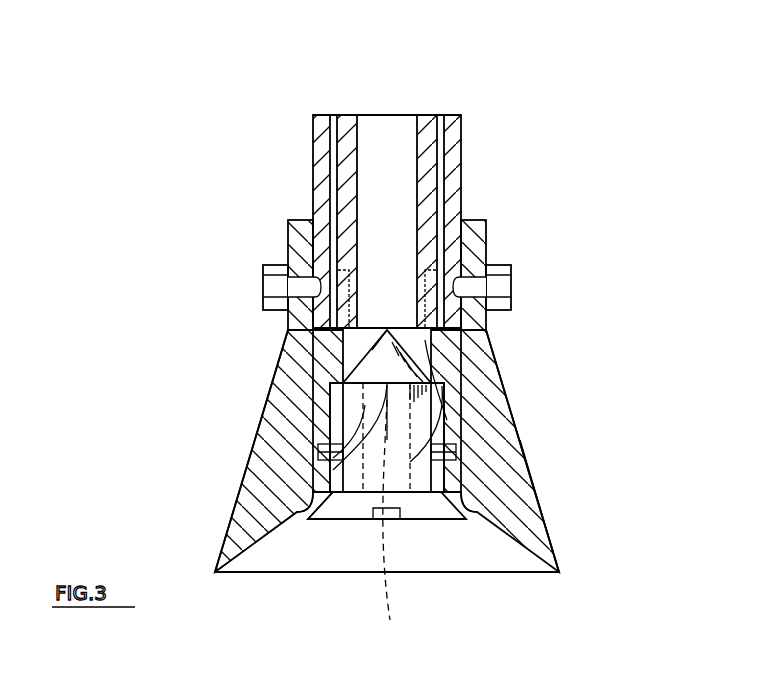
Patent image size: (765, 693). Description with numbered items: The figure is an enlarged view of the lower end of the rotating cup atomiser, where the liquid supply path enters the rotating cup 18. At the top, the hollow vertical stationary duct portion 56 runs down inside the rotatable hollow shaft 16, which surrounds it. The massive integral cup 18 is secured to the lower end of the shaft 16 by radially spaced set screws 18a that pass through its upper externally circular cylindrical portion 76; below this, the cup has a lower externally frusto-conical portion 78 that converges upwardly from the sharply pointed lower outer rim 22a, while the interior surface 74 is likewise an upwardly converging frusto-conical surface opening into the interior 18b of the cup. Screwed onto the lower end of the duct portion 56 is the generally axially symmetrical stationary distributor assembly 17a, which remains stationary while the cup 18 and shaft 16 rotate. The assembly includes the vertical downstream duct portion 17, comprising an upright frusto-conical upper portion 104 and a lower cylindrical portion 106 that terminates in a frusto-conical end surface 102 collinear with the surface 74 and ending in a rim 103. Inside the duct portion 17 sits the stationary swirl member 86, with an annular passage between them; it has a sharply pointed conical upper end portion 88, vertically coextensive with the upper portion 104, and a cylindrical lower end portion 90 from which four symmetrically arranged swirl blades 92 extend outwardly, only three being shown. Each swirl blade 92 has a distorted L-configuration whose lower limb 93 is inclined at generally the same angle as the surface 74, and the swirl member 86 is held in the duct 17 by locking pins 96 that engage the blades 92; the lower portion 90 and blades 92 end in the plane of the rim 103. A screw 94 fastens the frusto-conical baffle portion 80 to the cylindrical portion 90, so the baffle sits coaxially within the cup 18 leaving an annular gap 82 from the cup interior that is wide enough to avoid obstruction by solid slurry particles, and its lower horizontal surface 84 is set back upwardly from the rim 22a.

The rotatable hollow shaft 16 is at (461, 127).
The stationary duct portion 56 is at (412, 115).
The upper externally circular cylindrical portion 76 is at (488, 220).
The set screws 18a is at (273, 265).
The lower externally frusto-conical portion 78 is at (503, 395).
The rotating cup 18 is at (520, 447).
The conical upper end portion 88 is at (367, 362).
The frusto-conical upper portion 104 is at (372, 350).
The swirl member 86 is at (353, 410).
The swirl blades 92 is at (335, 393).
The downstream duct portion 17 is at (420, 358).
The lower limb 93 is at (330, 440).
The cylindrical lower end portion 90 is at (420, 398).
The lower cylindrical portion 106 is at (330, 438).
The locking pins 96 is at (456, 458).
The frusto-conical end surface 102 is at (297, 513).
The rim 103 is at (456, 498).
The baffle portion 80 is at (340, 520).
The annular gap 82 is at (297, 518).
The lower horizontal surface 84 is at (410, 520).
The screw 94 is at (391, 522).
The stationary distributor assembly 17a is at (441, 528).
The interior surface 74 is at (543, 556).
The rim 22a is at (557, 574).
The interior 18b is at (253, 547).